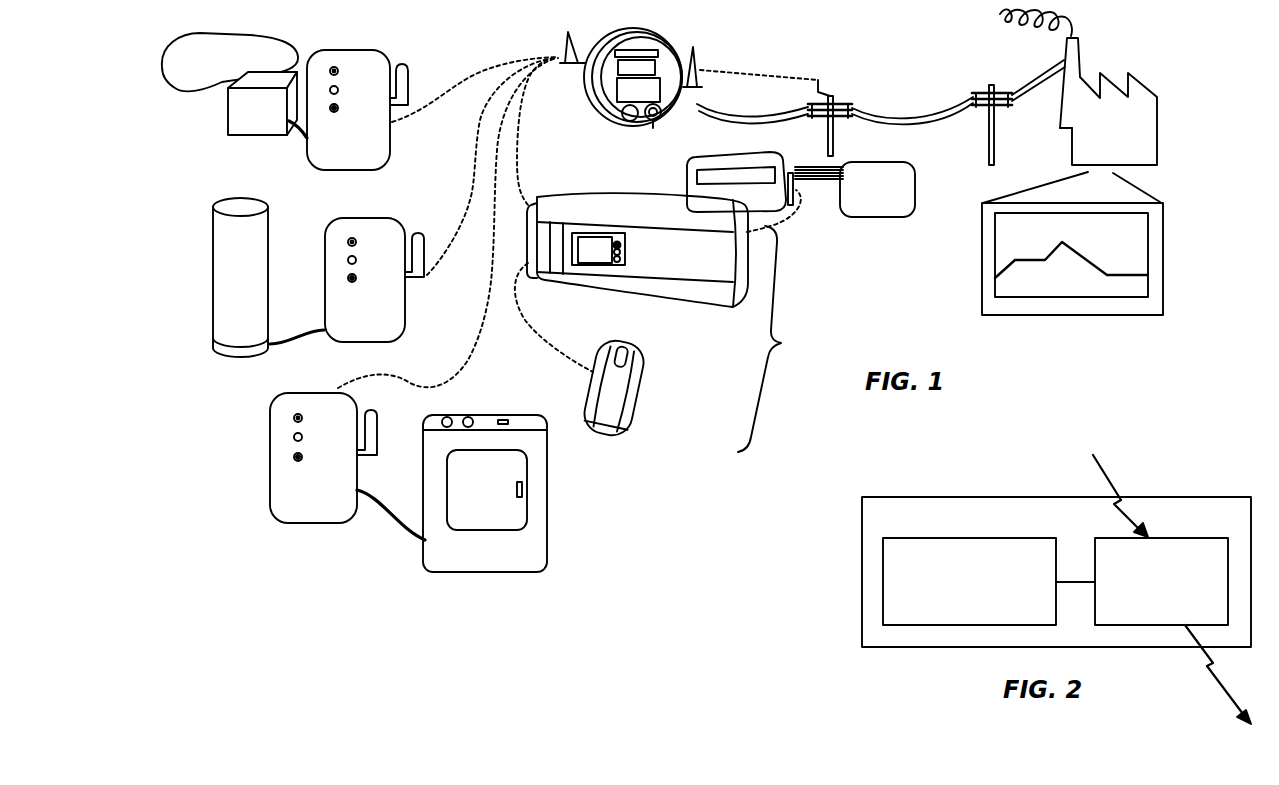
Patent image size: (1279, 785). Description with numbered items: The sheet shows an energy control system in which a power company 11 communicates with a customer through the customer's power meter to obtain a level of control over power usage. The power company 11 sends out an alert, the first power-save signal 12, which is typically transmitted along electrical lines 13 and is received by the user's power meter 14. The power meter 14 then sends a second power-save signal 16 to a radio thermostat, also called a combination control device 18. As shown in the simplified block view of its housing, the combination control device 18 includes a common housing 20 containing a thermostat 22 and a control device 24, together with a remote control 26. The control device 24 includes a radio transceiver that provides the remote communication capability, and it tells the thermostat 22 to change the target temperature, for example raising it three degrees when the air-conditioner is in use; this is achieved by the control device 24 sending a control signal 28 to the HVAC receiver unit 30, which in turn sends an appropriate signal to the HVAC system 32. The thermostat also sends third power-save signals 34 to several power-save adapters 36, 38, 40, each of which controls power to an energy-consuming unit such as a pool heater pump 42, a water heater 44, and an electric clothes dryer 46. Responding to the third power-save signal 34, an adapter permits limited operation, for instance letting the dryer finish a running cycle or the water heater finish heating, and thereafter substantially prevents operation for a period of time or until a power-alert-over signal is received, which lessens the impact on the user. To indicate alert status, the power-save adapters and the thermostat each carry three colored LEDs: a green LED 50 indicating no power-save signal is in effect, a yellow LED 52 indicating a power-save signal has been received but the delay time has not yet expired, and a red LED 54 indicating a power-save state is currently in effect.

In FIG. 1, the power company 11 is at (1178, 116).
In FIG. 1, the first power-save signal 12 is at (791, 73).
In FIG. 1, the electrical lines 13 is at (863, 107).
In FIG. 1, the power meter 14 is at (660, 32).
In FIG. 1, the second power-save signal 16 is at (518, 142).
In FIG. 2, the second power-save signal 16 is at (1104, 472).
In FIG. 1, the combination control device 18 is at (774, 339).
In FIG. 1, the common housing 20 is at (658, 293).
In FIG. 2, the common housing 20 is at (1183, 495).
In FIG. 2, the thermostat 22 is at (1012, 538).
In FIG. 2, the control device 24 is at (1181, 538).
In FIG. 1, the remote control 26 is at (612, 437).
In FIG. 1, the control signal 28 is at (790, 224).
In FIG. 2, the control signal 28 is at (1224, 688).
In FIG. 1, the HVAC receiver unit 30 is at (748, 158).
In FIG. 1, the HVAC system 32 is at (892, 163).
In FIG. 1, the third power-save signals 34 is at (499, 61).
In FIG. 1, the power-save adapter 36 is at (357, 49).
In FIG. 1, the hot water heater power-save adapter 38 is at (375, 218).
In FIG. 1, the electric dryer power-save adapter 40 is at (299, 393).
In FIG. 1, the pool heater pump 42 is at (230, 128).
In FIG. 1, the water heater 44 is at (230, 263).
In FIG. 1, the electric clothes dryer 46 is at (531, 543).
In FIG. 1, the green LED 50 is at (334, 66).
In FIG. 1, the yellow LED 52 is at (333, 85).
In FIG. 1, the red LED 54 is at (334, 110).